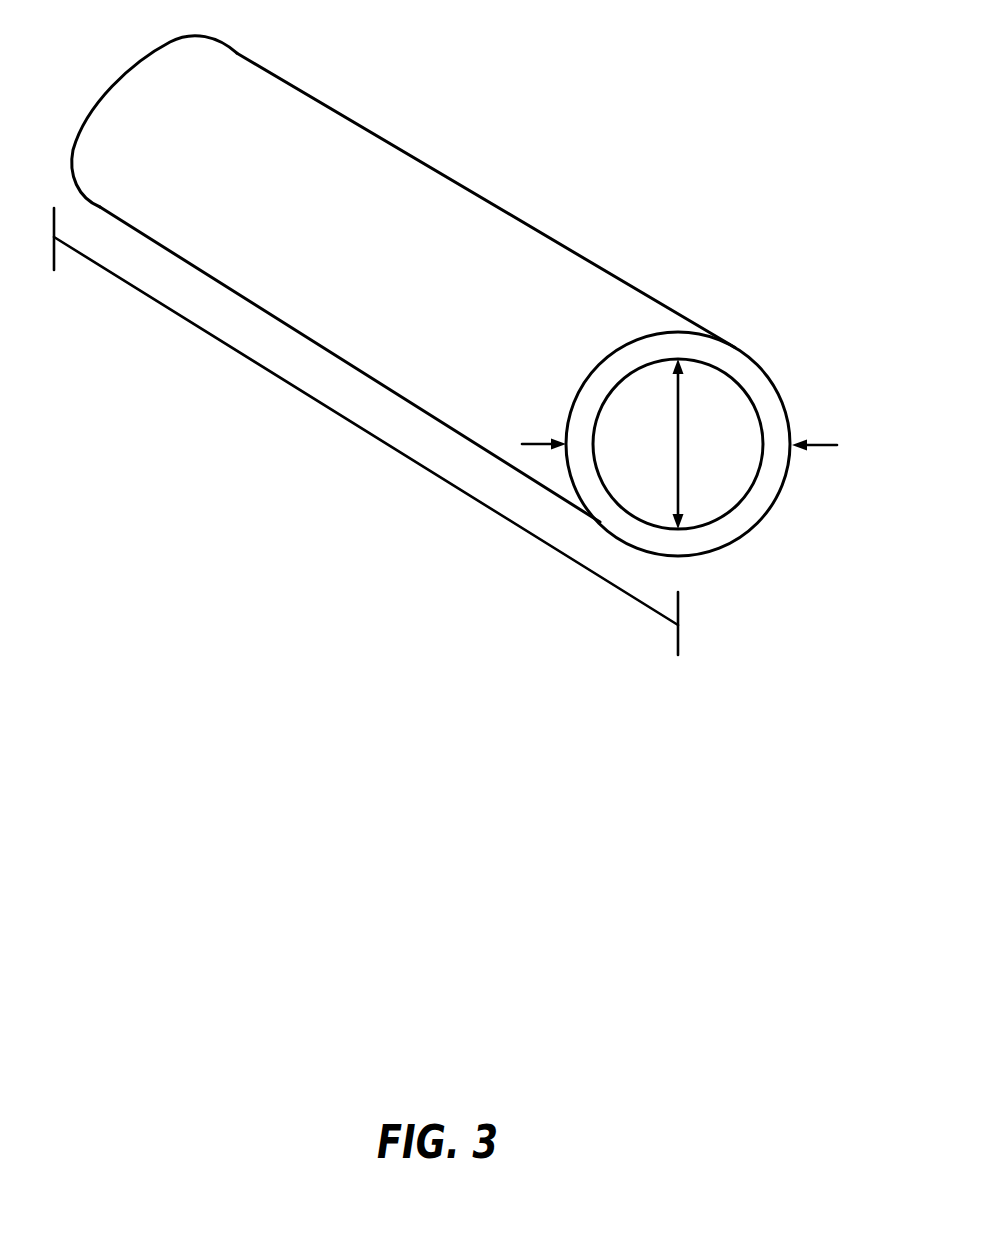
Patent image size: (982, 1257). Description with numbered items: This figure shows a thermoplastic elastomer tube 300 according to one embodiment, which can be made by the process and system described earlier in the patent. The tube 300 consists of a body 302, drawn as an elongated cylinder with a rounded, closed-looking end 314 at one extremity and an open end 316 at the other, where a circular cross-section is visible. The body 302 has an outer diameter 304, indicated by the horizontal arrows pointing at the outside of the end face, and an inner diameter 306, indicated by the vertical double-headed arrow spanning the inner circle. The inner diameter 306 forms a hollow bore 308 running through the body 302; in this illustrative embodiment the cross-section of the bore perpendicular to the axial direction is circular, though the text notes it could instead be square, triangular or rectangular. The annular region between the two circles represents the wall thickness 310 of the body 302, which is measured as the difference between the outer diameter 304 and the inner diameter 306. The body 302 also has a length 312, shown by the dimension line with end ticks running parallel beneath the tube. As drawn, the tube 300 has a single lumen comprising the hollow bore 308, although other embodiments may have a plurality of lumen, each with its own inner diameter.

The thermoplastic elastomer tube 300 is at (512, 97).
The body 302 is at (550, 237).
The outer diameter 304 is at (701, 445).
The inner diameter 306 is at (677, 443).
The hollow bore 308 is at (739, 417).
The wall thickness 310 is at (739, 532).
The length 312 is at (242, 353).
The closed first end 314 is at (272, 46).
The open second end 316 is at (758, 308).